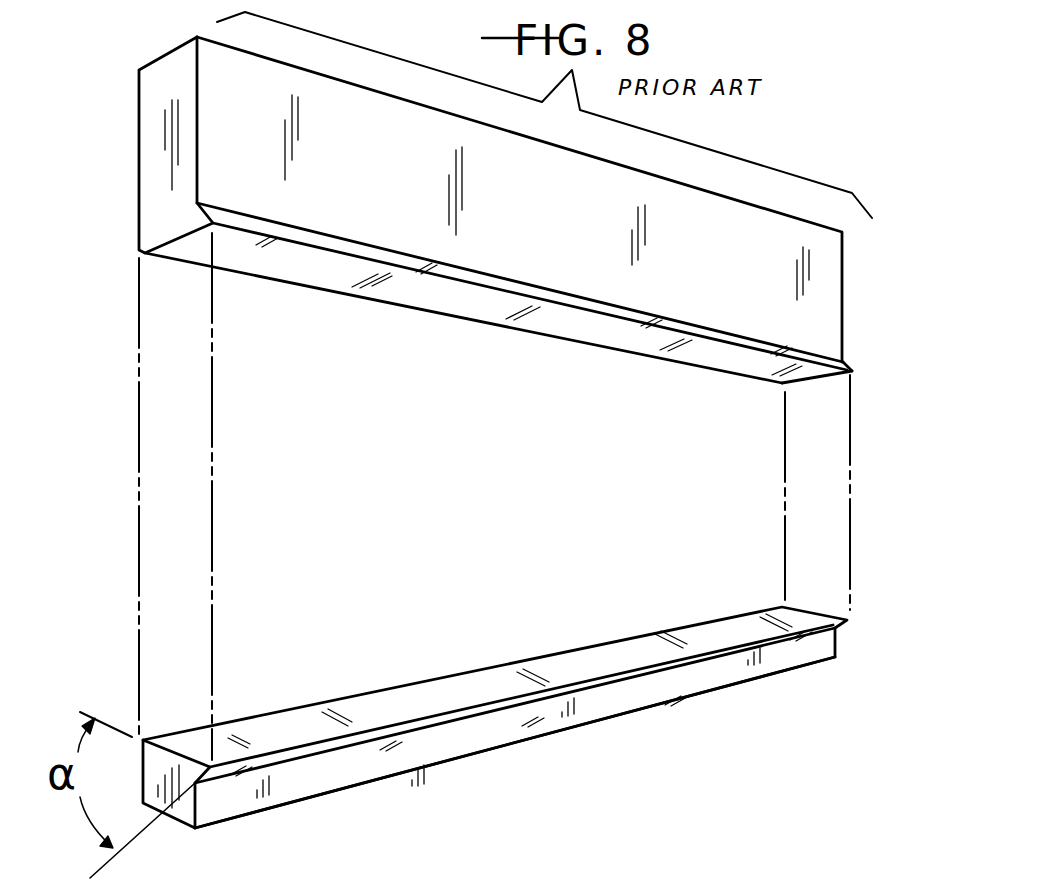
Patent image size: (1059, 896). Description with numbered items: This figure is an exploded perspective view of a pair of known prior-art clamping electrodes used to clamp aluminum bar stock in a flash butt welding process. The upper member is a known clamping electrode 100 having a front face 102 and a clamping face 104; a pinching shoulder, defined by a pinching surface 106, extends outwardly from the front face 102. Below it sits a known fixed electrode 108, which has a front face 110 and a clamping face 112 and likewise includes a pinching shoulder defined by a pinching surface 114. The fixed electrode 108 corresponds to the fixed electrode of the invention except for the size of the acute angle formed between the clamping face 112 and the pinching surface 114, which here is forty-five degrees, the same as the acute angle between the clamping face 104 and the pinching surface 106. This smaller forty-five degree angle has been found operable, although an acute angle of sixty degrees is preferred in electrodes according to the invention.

The clamping electrode 100 is at (463, 384).
The front face 102 is at (596, 246).
The clamping face 104 is at (420, 292).
The pinching surface 106 is at (348, 248).
The fixed electrode 108 is at (553, 745).
The front face 110 is at (460, 737).
The clamping face 112 is at (473, 690).
The pinching surface 114 is at (312, 755).